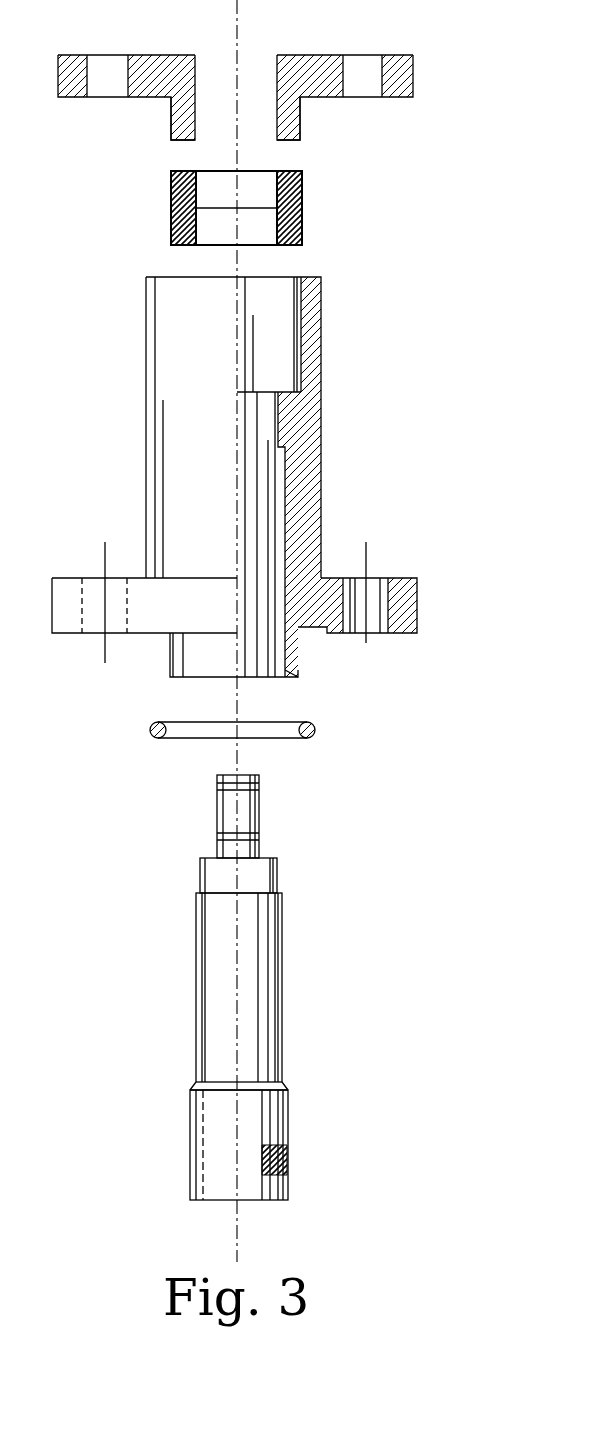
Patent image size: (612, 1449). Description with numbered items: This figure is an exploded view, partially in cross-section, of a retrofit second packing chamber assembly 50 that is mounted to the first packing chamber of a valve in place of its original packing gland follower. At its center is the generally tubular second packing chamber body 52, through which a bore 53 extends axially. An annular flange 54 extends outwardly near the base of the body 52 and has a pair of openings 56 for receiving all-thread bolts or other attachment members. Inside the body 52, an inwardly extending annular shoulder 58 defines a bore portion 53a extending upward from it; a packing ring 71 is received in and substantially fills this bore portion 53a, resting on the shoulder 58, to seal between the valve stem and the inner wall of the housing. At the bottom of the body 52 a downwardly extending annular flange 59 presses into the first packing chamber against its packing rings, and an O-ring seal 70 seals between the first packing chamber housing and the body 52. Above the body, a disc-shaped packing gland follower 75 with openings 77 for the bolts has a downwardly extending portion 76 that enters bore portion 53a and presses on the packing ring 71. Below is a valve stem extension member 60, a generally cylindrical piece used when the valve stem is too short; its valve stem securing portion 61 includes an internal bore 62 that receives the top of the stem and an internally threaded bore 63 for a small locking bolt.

The retrofit second packing chamber assembly 50 is at (451, 56).
The second packing chamber body 52 is at (300, 462).
The bore 53 is at (287, 418).
The bore portion 53a is at (301, 323).
The annular flange 54 is at (402, 633).
The openings 56 is at (88, 595).
The annular shoulder 58 is at (301, 381).
The downwardly extending annular flange 59 is at (295, 676).
The valve stem extension member 60 is at (322, 978).
The valve stem securing portion 61 is at (268, 1119).
The internal bore 62 is at (210, 1207).
The internally threaded bore 63 is at (288, 1162).
The O-ring seal 70 is at (150, 730).
The packing ring 71 is at (325, 208).
The packing gland follower 75 is at (301, 73).
The downwardly extending portion 76 is at (301, 125).
The openings 77 is at (86, 75).